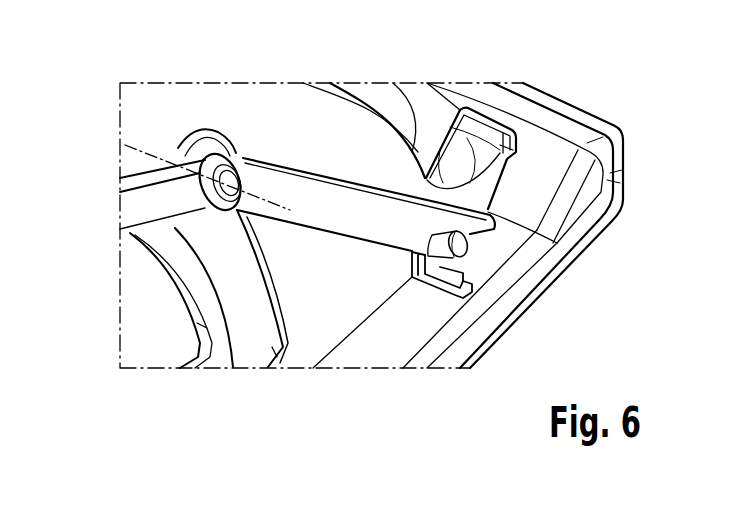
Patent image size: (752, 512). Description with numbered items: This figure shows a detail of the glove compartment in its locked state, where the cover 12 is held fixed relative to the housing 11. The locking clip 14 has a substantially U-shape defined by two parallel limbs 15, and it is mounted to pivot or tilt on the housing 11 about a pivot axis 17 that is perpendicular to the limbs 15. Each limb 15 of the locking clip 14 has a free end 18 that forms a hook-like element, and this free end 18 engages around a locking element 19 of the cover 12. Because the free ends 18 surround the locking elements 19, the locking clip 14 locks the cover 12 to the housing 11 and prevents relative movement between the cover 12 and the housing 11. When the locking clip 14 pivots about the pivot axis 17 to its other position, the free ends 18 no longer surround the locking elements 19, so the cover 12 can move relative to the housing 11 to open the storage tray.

The housing 11 is at (242, 322).
The cover 12 is at (496, 318).
The locking clip 14 is at (267, 153).
The limbs 15 is at (302, 192).
The pivot axis 17 is at (126, 147).
The free ends 18 is at (496, 226).
The locking elements 19 is at (468, 247).